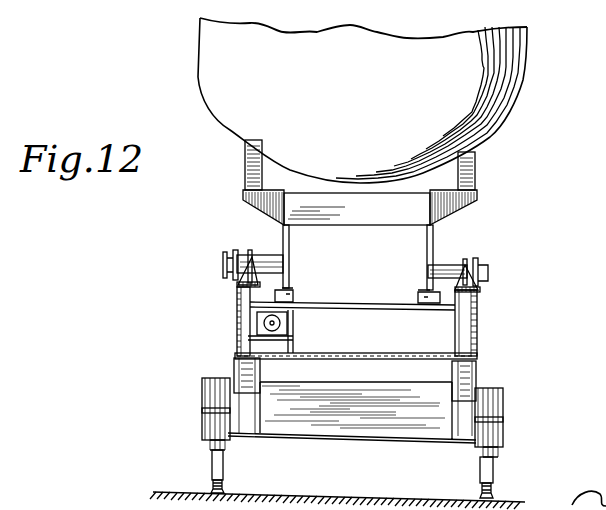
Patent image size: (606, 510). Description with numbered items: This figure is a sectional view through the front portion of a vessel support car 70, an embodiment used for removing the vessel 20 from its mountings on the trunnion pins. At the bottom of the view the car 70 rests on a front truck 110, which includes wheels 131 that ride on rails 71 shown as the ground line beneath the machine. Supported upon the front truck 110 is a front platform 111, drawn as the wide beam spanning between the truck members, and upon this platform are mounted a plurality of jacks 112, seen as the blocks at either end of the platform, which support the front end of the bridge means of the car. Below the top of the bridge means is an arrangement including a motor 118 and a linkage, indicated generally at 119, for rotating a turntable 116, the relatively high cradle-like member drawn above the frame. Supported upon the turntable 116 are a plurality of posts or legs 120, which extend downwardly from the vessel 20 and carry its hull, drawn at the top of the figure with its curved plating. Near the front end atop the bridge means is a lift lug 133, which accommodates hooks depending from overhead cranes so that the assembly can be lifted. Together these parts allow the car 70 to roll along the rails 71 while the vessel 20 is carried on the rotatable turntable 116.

The vessel 20 is at (372, 122).
The car 70 is at (487, 348).
The rails 71 is at (222, 491).
The front truck 110 is at (207, 453).
The front platform 111 is at (330, 377).
The jacks 112 is at (262, 370).
The turntable 116 is at (347, 212).
The motor 118 is at (276, 325).
The linkage 119 is at (264, 303).
The posts or legs 120 is at (248, 174).
The wheels 131 is at (222, 474).
The lift lug 133 is at (445, 273).